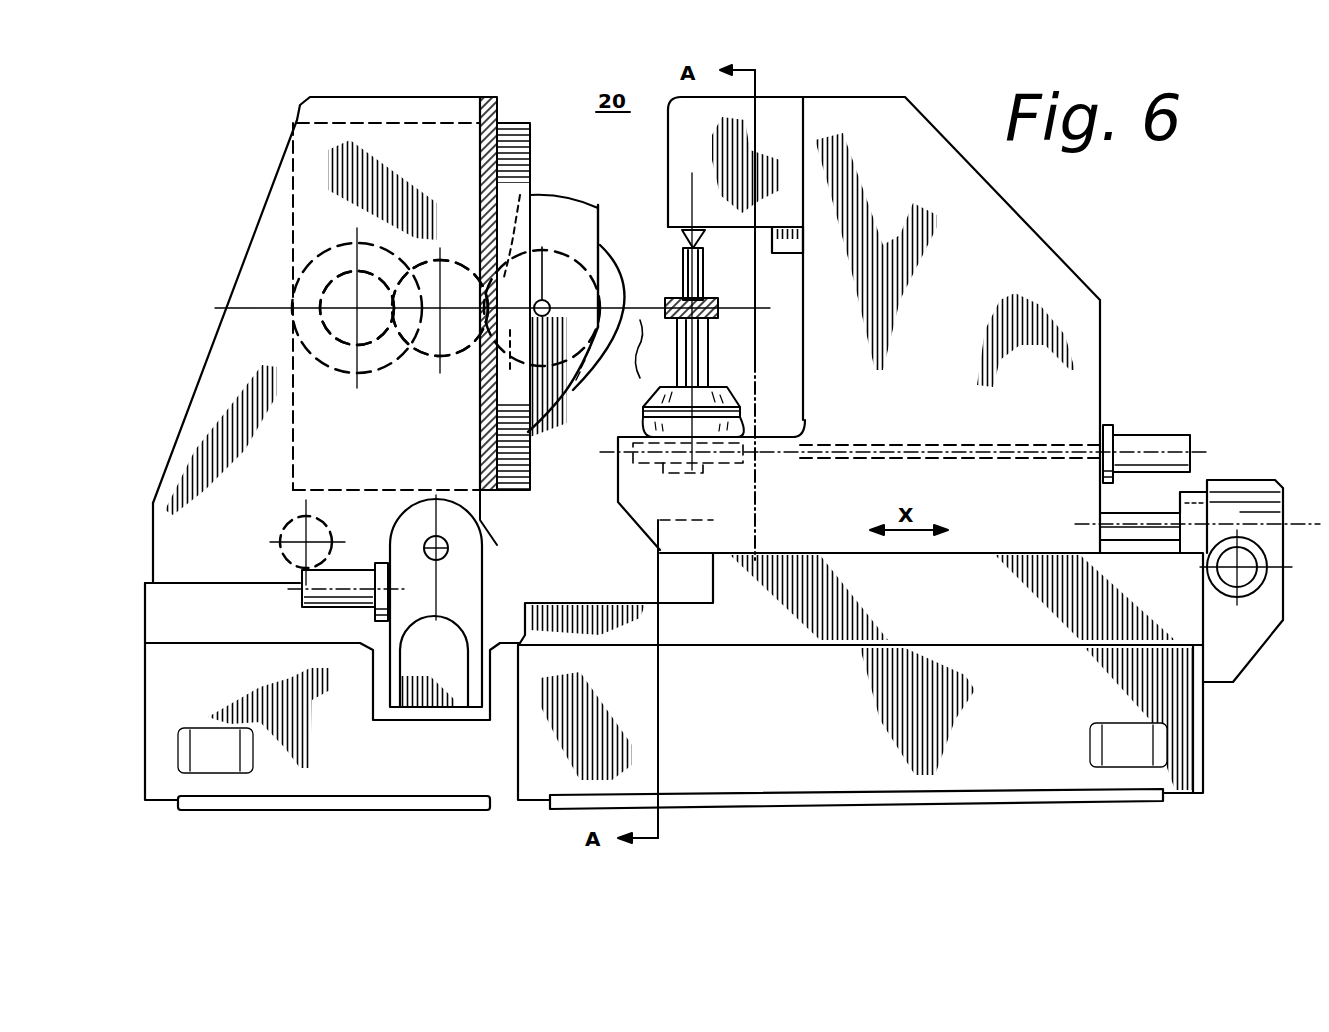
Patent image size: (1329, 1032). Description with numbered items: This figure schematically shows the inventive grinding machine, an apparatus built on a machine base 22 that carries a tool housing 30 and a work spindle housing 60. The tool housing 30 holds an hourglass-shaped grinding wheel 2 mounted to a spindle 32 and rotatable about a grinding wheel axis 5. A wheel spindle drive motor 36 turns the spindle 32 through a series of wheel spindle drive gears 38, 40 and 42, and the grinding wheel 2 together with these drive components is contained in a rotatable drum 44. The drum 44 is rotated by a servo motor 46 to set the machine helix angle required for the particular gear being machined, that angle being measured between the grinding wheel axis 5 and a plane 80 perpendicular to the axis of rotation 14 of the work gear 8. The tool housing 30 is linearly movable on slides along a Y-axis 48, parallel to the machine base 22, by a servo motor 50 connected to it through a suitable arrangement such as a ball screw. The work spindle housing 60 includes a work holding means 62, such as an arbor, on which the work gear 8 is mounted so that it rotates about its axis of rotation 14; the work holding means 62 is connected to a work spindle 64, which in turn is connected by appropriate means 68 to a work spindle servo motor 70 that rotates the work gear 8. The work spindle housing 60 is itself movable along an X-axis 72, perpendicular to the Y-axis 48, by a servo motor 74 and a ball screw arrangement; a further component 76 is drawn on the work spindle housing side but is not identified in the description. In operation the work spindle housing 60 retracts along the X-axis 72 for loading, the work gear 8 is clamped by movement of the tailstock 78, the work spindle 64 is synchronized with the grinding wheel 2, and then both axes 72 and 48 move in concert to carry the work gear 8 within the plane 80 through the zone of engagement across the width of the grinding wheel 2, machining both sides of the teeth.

The grinding wheel 2 is at (610, 270).
The grinding wheel axis 5 is at (541, 305).
The work gear 8 is at (706, 311).
The axis of rotation 14 is at (743, 400).
The machine base 22 is at (155, 700).
The tool housing 30 is at (209, 404).
The spindle 32 is at (543, 308).
The wheel spindle drive motor 36 is at (401, 357).
The wheel spindle drive gear 38 is at (347, 347).
The wheel spindle drive gear 40 is at (445, 262).
The wheel spindle drive gear 42 is at (540, 182).
The rotatable drum 44 is at (336, 140).
The servo motor 46 is at (280, 546).
The axis (Y-axis) 48 is at (447, 547).
The servo motor 50 is at (300, 598).
The work spindle housing 60 is at (1073, 287).
The work holding means 62 is at (708, 372).
The work spindle 64 is at (642, 410).
The appropriate means 68 is at (990, 445).
The work spindle servo motor 70 is at (1180, 443).
The axis (X-axis) 72 is at (1232, 505).
The servo motor 74 is at (1247, 573).
The slide block 76 is at (1148, 553).
The tailstock 78 is at (773, 111).
The plane 80 is at (623, 357).